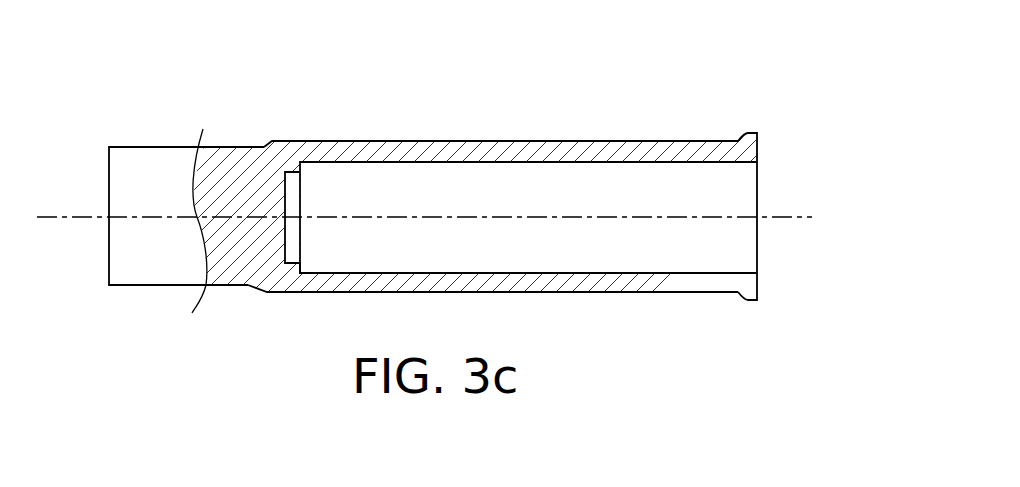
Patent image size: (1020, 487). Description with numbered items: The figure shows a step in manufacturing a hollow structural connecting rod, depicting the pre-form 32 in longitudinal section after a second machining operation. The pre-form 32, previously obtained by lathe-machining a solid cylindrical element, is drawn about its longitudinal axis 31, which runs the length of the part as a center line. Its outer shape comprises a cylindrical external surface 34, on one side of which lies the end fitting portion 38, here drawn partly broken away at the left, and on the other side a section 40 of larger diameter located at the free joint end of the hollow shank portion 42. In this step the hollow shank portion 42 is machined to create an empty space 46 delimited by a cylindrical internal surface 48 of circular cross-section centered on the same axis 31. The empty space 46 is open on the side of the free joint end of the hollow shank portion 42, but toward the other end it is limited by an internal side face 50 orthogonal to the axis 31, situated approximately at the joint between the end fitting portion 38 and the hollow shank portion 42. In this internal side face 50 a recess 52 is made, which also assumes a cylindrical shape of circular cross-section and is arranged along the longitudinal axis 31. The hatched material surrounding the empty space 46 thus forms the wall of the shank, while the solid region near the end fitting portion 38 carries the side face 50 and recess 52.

The longitudinal axis 31 is at (55, 216).
The pre-form 32 is at (393, 108).
The cylindrical external surface 34 is at (554, 141).
The end fitting portion 38 is at (160, 310).
The section of larger diameter 40 is at (756, 133).
The hollow shank portion 42 is at (616, 321).
The empty space 46 is at (568, 257).
The cylindrical internal surface 48 is at (393, 163).
The internal side face 50 is at (303, 265).
The recess 52 is at (288, 241).